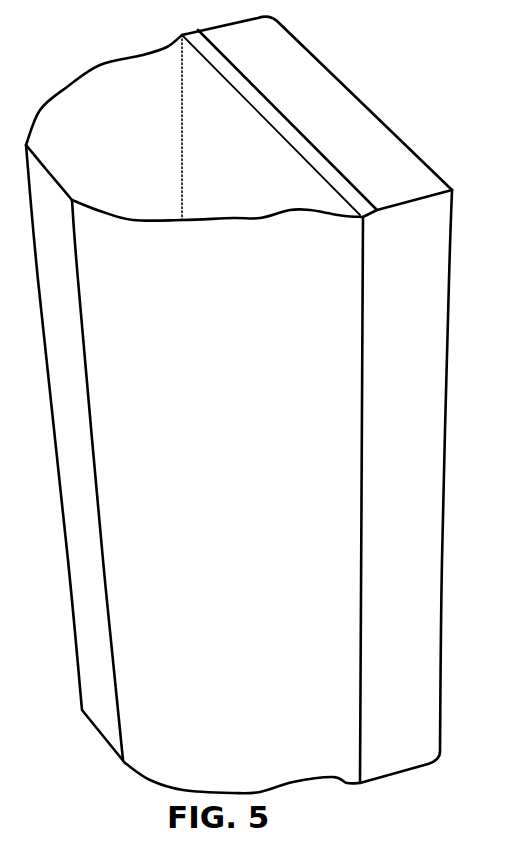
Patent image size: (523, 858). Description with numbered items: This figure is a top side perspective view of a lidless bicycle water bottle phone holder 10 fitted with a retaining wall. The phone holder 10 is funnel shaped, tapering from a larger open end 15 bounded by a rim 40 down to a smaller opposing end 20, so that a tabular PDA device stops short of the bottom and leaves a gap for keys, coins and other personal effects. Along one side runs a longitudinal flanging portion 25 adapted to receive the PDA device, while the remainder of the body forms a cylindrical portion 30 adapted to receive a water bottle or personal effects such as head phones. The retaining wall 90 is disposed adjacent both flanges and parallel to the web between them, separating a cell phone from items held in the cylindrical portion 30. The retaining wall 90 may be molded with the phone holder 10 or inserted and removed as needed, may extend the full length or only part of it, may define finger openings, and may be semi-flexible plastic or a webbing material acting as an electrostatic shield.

The bicycle phone holder 10 is at (152, 724).
The open end 15 is at (88, 72).
The opposing end 20 is at (333, 779).
The longitudinal flanging portion 25 is at (428, 420).
The cylindrical portion 30 is at (190, 492).
The rim 40 is at (200, 217).
The retaining wall 90 is at (212, 161).